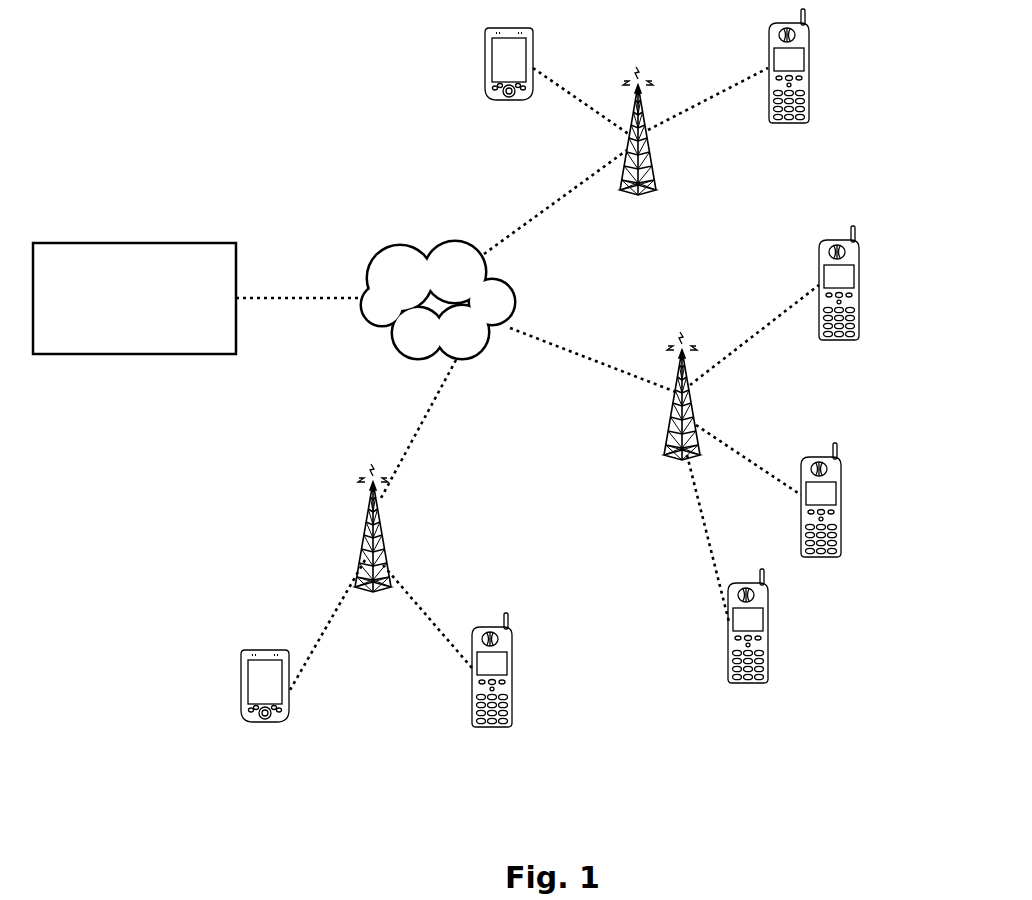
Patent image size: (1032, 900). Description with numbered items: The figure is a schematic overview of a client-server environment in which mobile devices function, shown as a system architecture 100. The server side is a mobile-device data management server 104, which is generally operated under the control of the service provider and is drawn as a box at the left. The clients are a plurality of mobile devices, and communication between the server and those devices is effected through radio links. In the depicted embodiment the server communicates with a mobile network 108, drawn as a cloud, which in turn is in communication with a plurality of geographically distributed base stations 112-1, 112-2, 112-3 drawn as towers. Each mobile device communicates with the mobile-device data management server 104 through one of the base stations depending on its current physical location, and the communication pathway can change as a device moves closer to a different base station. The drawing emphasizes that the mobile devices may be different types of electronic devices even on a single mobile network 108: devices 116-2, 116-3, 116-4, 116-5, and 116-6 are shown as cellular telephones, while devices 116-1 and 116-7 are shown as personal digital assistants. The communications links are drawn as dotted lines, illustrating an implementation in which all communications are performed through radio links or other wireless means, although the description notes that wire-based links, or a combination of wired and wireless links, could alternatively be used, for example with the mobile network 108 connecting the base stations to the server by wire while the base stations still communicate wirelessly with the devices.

The system architecture 100 is at (411, 93).
The mobile-device data management server 104 is at (124, 243).
The mobile network 108 is at (413, 246).
The base station 112-1 is at (654, 186).
The base station 112-2 is at (668, 440).
The base station 112-3 is at (367, 526).
The mobile device 116-1 is at (515, 101).
The mobile device 116-2 is at (800, 123).
The mobile device 116-3 is at (846, 340).
The mobile device 116-4 is at (826, 556).
The mobile device 116-5 is at (754, 683).
The mobile device 116-6 is at (497, 726).
The mobile device 116-7 is at (278, 723).